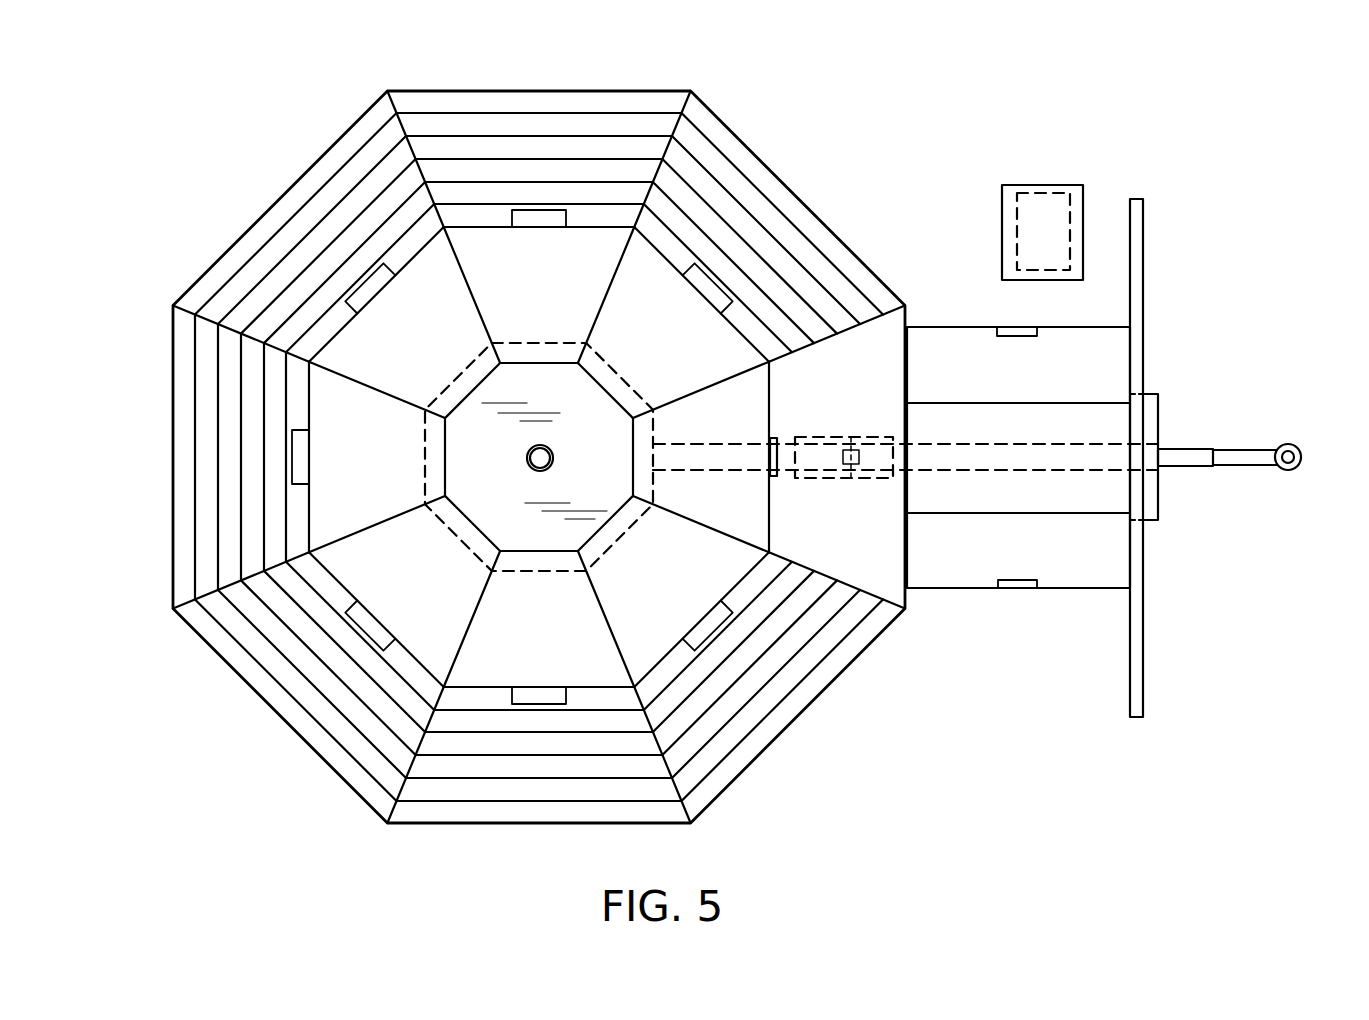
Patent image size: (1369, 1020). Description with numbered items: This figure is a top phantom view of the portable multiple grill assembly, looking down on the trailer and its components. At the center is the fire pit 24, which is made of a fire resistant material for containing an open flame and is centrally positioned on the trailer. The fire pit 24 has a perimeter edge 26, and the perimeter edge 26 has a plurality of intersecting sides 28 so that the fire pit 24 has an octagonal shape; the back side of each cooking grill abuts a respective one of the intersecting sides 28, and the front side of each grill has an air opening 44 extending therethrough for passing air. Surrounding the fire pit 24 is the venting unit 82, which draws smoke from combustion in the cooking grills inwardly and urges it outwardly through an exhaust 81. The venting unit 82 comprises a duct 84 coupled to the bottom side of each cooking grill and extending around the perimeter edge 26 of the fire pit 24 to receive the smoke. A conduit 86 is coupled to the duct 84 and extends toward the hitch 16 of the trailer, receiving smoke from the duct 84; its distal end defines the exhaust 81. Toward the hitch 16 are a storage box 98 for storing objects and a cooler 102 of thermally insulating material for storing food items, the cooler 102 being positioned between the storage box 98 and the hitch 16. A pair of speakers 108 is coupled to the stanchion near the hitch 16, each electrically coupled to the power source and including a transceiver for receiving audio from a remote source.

The hitch 16 is at (1298, 467).
The fire pit 24 is at (540, 357).
The perimeter edge 26 is at (585, 364).
The intersecting sides 28 is at (447, 463).
The air opening 44 is at (488, 657).
The exhaust 81 is at (1148, 443).
The venting unit 82 is at (712, 400).
The duct 84 is at (628, 531).
The conduit 86 is at (937, 447).
The storage box 98 is at (882, 557).
The cooler 102 is at (1064, 566).
The speakers 108 is at (1153, 400).